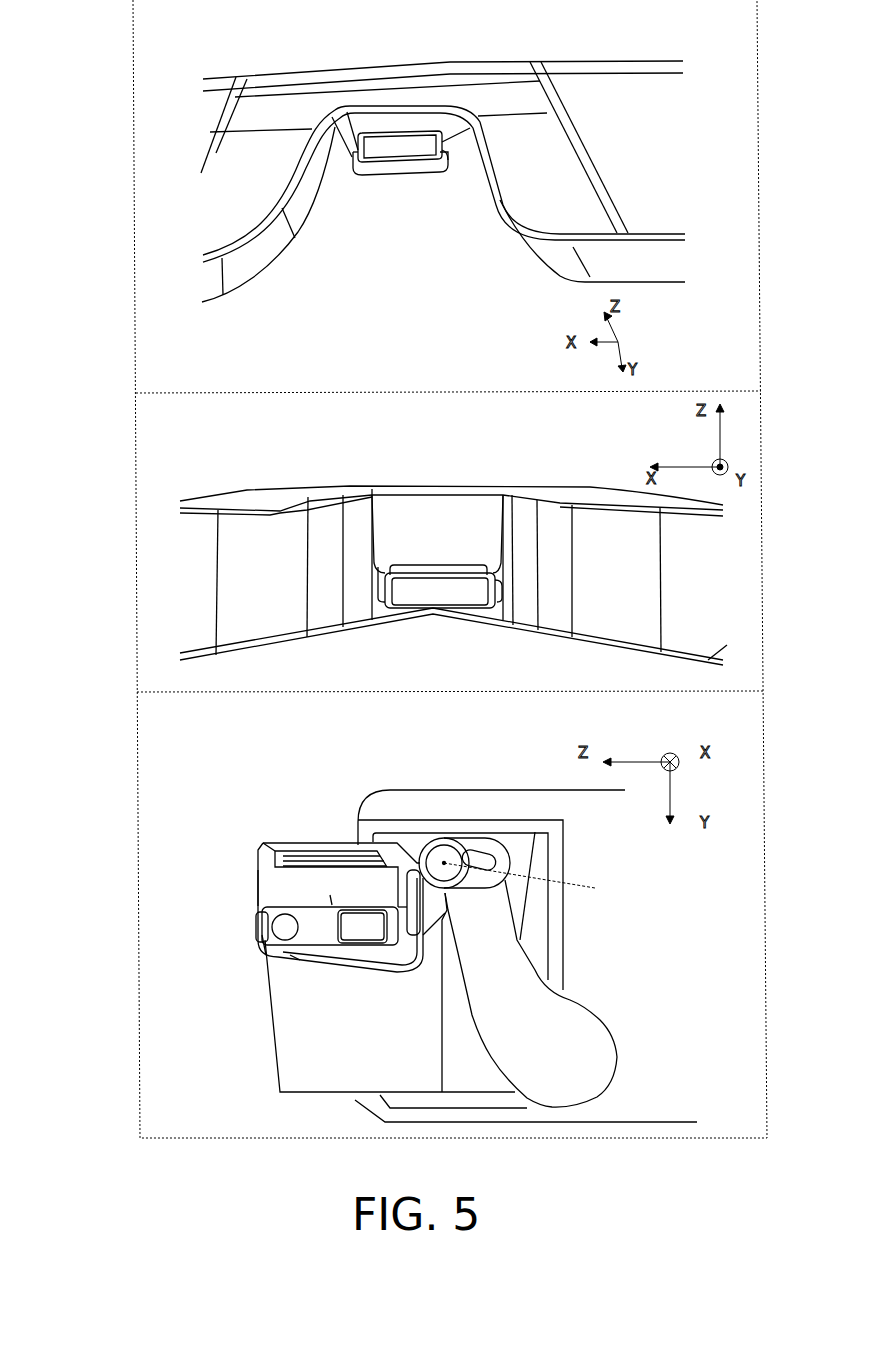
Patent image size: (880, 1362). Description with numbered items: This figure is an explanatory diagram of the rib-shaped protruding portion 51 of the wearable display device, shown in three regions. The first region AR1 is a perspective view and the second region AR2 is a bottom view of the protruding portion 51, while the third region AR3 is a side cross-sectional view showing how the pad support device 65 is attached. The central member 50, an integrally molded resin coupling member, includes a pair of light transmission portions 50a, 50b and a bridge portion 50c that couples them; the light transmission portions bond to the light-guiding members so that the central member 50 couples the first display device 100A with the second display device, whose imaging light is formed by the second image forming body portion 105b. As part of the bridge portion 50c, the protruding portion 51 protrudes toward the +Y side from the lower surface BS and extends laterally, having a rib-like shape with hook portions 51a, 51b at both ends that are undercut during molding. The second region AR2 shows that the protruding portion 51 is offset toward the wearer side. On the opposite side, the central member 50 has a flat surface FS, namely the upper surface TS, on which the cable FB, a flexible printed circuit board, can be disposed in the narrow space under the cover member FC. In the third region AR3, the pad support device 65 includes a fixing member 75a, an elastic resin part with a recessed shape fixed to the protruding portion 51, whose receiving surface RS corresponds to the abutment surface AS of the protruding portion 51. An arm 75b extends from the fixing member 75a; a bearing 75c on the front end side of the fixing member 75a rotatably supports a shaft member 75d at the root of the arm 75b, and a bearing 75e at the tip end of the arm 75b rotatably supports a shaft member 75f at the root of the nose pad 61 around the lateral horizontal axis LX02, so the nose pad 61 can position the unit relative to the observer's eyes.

The central member 50 is at (434, 306).
The light transmission portion 50a is at (540, 207).
The light transmission portion 50b is at (235, 210).
The bridge portion 50c is at (385, 108).
The protruding portion 51 is at (392, 165).
The hook portion 51a is at (447, 165).
The hook portion 51b is at (358, 160).
The abutment surface AS is at (398, 152).
The first region AR1 is at (135, 157).
The second region AR2 is at (137, 475).
The third region AR3 is at (138, 785).
The first display device 100A is at (190, 788).
The second image forming body portion 105b is at (443, 808).
The nose pad 61 is at (572, 1018).
The pad support device 65 is at (371, 1018).
The fixing member 75a is at (308, 930).
The arm 75b is at (372, 955).
The bearing 75c is at (270, 942).
The shaft member 75d is at (272, 930).
The bearing 75e is at (457, 838).
The shaft member 75f is at (432, 840).
The lateral horizontal axis LX02 is at (544, 882).
The receiving surface RS is at (300, 888).
The lower surface BS is at (330, 897).
The cover member FC is at (285, 848).
The flat surface FS is at (308, 850).
The upper surface TS is at (333, 818).
The cable FB is at (332, 850).